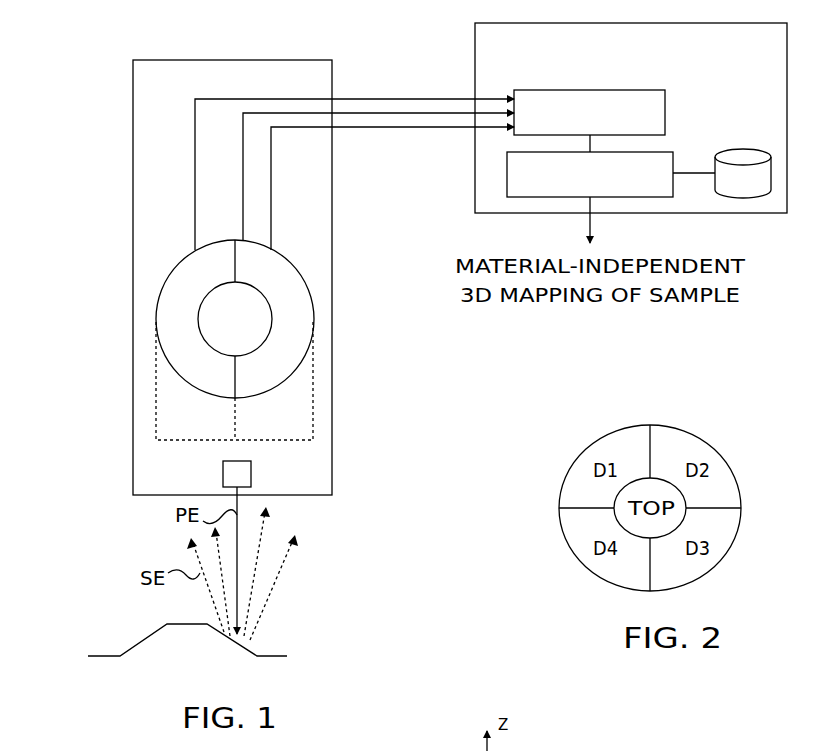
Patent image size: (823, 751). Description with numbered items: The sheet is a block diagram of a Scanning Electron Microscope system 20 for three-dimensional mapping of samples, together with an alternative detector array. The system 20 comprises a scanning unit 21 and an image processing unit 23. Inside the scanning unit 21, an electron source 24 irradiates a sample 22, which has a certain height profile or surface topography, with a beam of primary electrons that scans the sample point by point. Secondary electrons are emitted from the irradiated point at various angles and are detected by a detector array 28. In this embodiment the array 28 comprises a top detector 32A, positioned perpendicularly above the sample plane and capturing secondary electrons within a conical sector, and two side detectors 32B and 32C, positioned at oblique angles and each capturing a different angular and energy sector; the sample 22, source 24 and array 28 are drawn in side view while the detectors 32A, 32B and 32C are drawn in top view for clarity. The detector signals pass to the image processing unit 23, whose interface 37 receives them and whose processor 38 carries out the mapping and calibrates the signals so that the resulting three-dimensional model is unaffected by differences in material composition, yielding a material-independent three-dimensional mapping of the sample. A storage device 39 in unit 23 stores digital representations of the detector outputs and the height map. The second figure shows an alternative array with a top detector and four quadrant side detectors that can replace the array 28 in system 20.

The Scanning Electron Microscope system 20 is at (146, 22).
The scanning unit 21 is at (133, 120).
The sample 22 is at (127, 650).
The image processing unit 23 is at (787, 213).
The electron source 24 is at (223, 472).
The detector array 28 is at (313, 441).
The top detector 32A is at (258, 291).
The side detector D1 32B is at (157, 300).
The side detector D2 32C is at (313, 300).
The interface 37 is at (665, 110).
The processor 38 is at (507, 172).
The storage device 39 is at (736, 150).